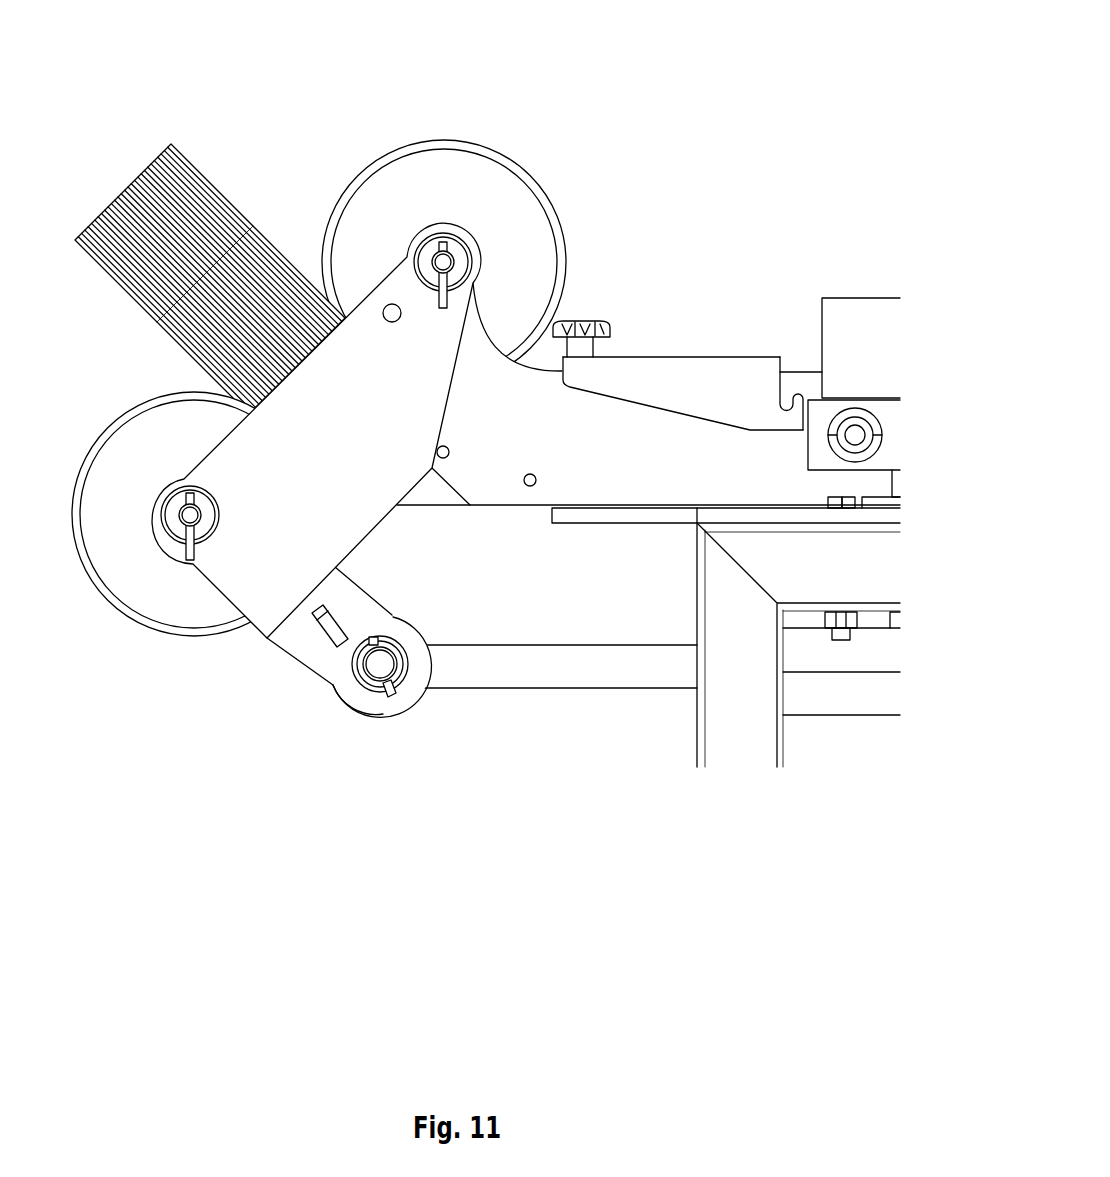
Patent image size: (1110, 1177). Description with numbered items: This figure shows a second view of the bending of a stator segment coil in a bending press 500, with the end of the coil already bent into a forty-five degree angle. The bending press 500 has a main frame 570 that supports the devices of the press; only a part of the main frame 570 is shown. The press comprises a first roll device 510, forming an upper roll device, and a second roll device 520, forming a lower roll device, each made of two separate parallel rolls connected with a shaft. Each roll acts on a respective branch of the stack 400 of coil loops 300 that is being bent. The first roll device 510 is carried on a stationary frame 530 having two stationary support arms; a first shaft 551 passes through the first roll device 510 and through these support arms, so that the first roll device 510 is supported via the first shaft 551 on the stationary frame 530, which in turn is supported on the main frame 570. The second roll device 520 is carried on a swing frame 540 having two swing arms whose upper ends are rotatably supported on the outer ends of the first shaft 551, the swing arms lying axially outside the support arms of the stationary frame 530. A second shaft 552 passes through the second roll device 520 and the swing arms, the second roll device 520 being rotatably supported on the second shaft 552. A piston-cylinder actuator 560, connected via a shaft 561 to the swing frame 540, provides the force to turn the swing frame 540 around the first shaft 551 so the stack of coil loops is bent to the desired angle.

The coil loops 300 is at (92, 208).
The stack 400 is at (136, 100).
The bending press 500 is at (648, 101).
The first roll device 510 is at (439, 140).
The second roll device 520 is at (158, 632).
The stationary frame 530 is at (532, 443).
The swing frame 540 is at (352, 460).
The first shaft 551 is at (440, 265).
The second shaft 552 is at (193, 514).
The piston-cylinder actuator 560 is at (548, 675).
The shaft 561 is at (381, 662).
The main frame 570 is at (740, 738).